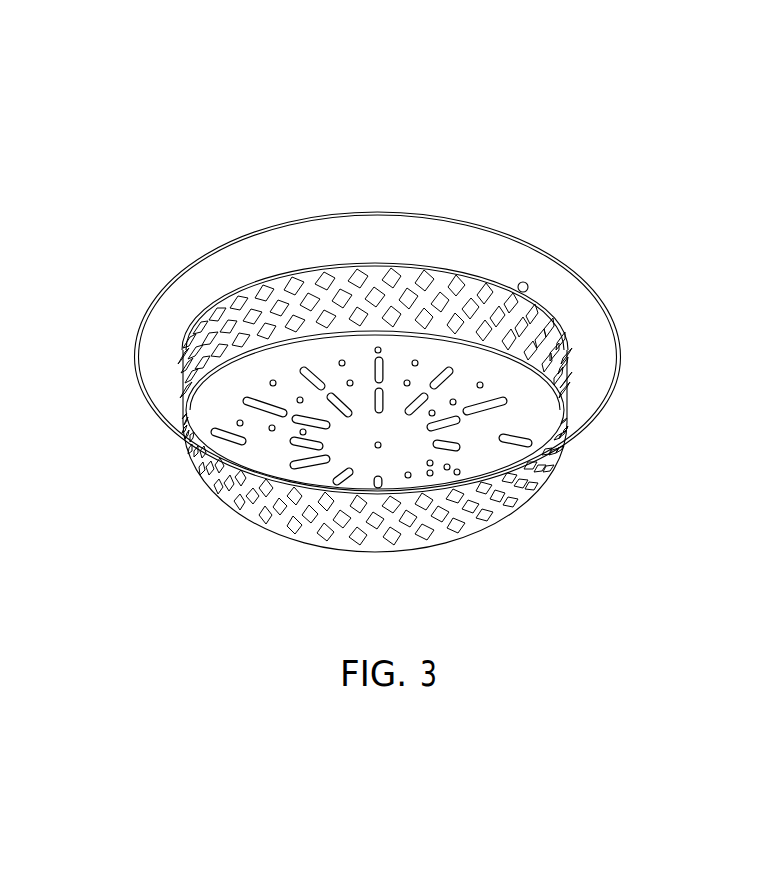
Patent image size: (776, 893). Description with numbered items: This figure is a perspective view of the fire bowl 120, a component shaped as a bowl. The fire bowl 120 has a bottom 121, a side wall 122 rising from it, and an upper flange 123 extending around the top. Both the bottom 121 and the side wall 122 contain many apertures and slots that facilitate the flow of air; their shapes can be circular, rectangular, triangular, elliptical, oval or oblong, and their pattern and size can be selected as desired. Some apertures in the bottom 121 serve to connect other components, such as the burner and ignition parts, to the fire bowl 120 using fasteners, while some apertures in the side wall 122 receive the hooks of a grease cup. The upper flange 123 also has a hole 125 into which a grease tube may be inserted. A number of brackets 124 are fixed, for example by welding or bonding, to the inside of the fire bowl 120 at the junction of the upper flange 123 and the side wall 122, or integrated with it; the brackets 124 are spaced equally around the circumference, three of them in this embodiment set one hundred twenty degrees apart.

The fire bowl 120 is at (237, 161).
The bottom 121 is at (403, 455).
The side wall 122 is at (473, 500).
The upper flange 123 is at (572, 323).
The brackets 124 is at (360, 267).
The hole 125 is at (527, 283).